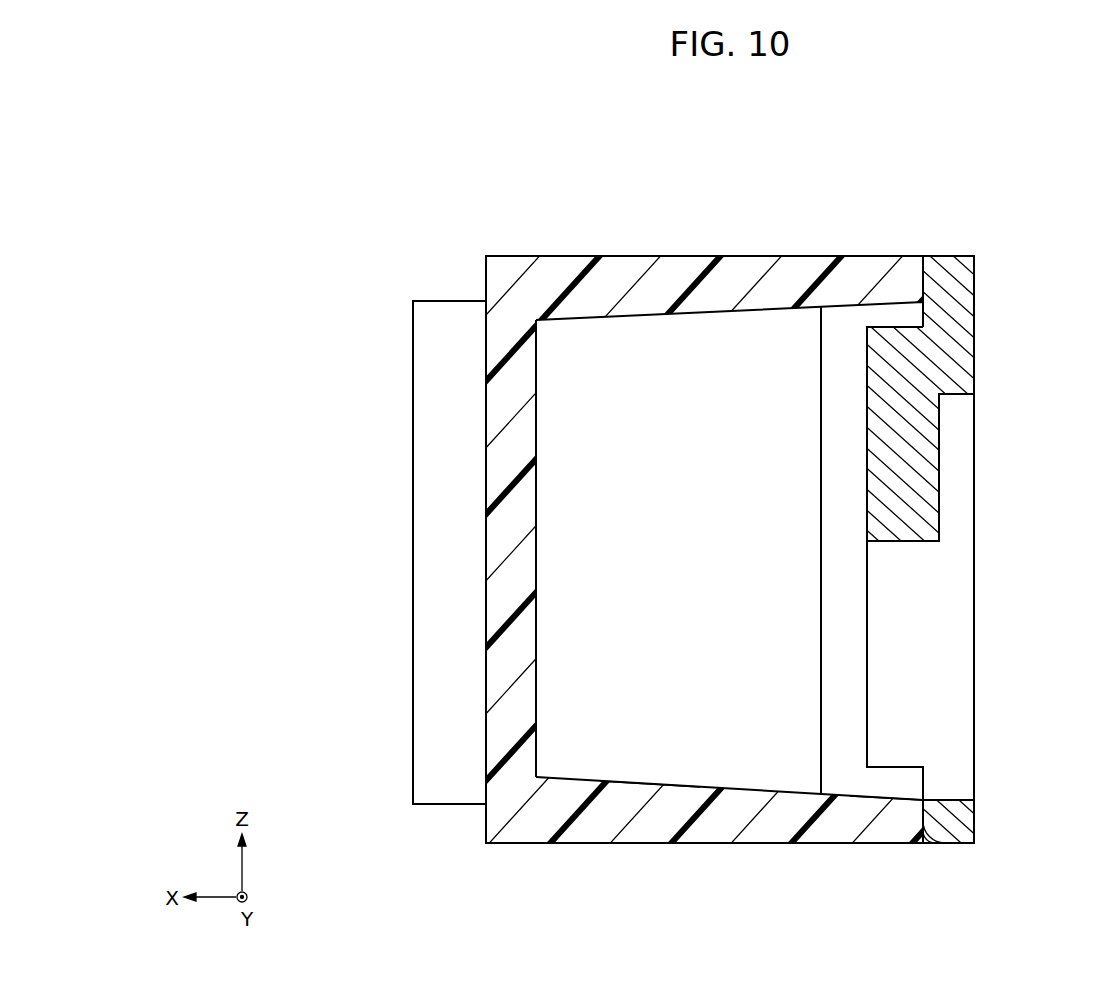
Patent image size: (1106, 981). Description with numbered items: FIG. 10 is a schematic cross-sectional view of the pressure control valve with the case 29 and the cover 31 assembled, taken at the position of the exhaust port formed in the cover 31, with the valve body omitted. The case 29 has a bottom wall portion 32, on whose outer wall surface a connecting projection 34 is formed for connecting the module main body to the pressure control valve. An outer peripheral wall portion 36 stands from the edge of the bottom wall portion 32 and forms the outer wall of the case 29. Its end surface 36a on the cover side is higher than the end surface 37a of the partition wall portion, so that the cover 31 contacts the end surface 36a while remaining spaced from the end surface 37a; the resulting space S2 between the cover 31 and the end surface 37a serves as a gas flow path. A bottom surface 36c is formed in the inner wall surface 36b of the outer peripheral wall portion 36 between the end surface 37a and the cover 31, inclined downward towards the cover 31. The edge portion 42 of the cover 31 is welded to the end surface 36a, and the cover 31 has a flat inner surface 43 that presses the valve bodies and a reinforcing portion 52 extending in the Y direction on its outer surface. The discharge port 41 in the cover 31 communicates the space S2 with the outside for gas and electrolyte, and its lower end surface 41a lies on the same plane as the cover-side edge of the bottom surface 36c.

The case 29 is at (652, 246).
The cover 31 is at (948, 528).
The bottom wall portion 32 is at (500, 737).
The connecting projections 34 is at (445, 322).
The outer peripheral wall portion 36 is at (731, 270).
The end surface of the outer peripheral wall portion 36a is at (952, 834).
The inner wall surface of the outer peripheral wall portion 36b is at (658, 794).
The bottom surface 36c is at (881, 797).
The end surface of the partition wall portion 37a is at (832, 794).
The discharge port 41 is at (957, 666).
The lower end surface of the discharge port 41a is at (952, 800).
The edge portion of the cover 42 is at (950, 268).
The inner surface of the cover 43 is at (867, 418).
The reinforcing portions 52 is at (962, 362).
The space S2 is at (829, 599).